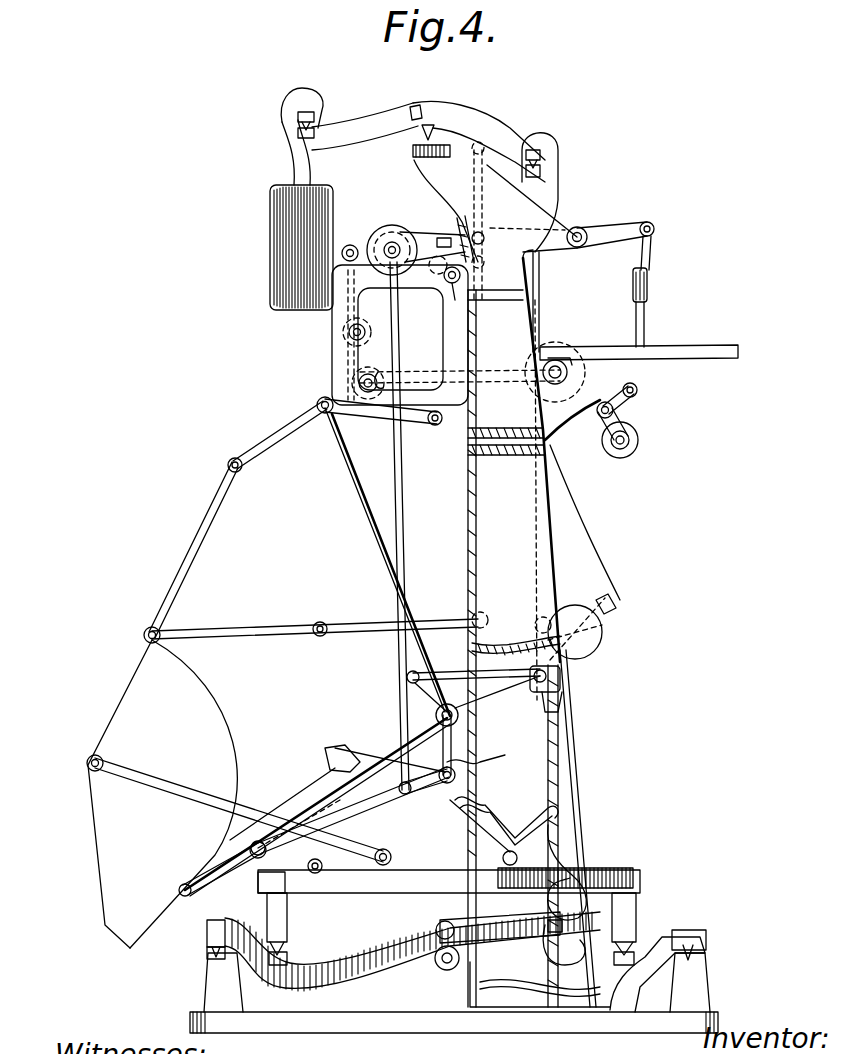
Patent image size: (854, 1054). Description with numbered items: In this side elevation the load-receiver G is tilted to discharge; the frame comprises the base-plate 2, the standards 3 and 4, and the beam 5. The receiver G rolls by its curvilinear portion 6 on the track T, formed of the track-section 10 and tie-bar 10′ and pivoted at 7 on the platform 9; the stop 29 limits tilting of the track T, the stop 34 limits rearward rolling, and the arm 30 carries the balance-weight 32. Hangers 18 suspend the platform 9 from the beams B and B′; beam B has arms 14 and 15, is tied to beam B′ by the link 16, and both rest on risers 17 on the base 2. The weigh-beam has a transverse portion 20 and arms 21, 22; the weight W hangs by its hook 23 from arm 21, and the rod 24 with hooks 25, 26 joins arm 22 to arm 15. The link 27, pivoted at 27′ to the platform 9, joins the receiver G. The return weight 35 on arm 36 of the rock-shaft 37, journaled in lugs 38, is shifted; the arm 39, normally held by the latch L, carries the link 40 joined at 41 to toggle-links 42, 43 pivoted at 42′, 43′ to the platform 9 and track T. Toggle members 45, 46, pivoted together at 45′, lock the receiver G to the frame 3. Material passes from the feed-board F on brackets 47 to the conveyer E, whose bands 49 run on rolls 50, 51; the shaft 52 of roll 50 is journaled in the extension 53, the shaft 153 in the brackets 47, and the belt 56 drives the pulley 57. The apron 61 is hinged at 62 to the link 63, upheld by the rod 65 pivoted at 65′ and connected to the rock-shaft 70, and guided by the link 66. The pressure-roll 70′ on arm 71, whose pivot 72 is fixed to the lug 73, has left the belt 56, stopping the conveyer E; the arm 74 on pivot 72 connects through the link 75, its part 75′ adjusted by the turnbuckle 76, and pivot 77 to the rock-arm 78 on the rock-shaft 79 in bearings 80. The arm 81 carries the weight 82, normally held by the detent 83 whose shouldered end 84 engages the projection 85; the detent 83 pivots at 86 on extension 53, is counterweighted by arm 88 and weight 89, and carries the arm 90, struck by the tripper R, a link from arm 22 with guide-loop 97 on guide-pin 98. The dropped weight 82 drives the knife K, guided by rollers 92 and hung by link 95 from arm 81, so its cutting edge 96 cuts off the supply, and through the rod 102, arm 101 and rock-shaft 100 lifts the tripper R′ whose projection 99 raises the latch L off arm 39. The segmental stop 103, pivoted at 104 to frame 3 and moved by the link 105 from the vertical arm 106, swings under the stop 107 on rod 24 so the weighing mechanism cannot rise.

The base plate 2 is at (390, 1012).
The standard column 3 is at (472, 530).
The rack bar 4 is at (560, 752).
The upper column 5 is at (514, 286).
The segment edge 6 is at (234, 758).
The link 7 is at (440, 745).
The cross beam 9 is at (375, 880).
The lever bar 10 is at (353, 768).
The lever pivot 10′ is at (182, 890).
The curved bar 14 is at (358, 958).
The lower bar 15 is at (525, 935).
The roller 16 is at (435, 960).
The foot 17 is at (208, 972).
The standard post 18 is at (267, 905).
The arm joint 20 is at (422, 112).
The arm 21 is at (347, 125).
The arm 22 is at (470, 128).
The spout 23 is at (282, 112).
The slide bar 24 is at (541, 282).
The hook 25 is at (552, 132).
The hook 26 is at (568, 950).
The rod 27 is at (205, 793).
The rod pivot 27′ is at (388, 852).
The link 29 is at (250, 858).
The disc 30 is at (603, 612).
The pin 32 is at (585, 606).
The stop 34 is at (340, 745).
The hook 35 is at (550, 900).
The pivot 36 is at (548, 858).
The bracket 37 is at (515, 876).
The block 38 is at (548, 878).
The link 39 is at (480, 808).
The link 40 is at (352, 812).
The pivot 41 is at (258, 840).
The pivot 42 is at (262, 860).
The pivot 42′ is at (314, 874).
The link 43 is at (295, 808).
The link 43′ is at (312, 782).
The rod 45 is at (253, 631).
The pivot 45′ is at (158, 630).
The rod 46 is at (352, 627).
The arm 47 is at (572, 414).
The plate 49 is at (430, 372).
The pawl 50 is at (375, 372).
The bar 51 is at (563, 365).
The pivot 52 is at (358, 385).
The plate 53 is at (336, 338).
The cam 56 is at (608, 502).
The bar 57 is at (552, 360).
The link 61 is at (272, 432).
The pivot 62 is at (232, 461).
The link 63 is at (192, 538).
The rod 65 is at (345, 468).
The pivot 65′ is at (316, 403).
The bar 66 is at (378, 412).
The bar 70 is at (447, 680).
The pulley 70′ is at (638, 442).
The link 71 is at (620, 425).
The pivot 72 is at (613, 410).
The link 73 is at (625, 392).
The pivot 74 is at (637, 391).
The rod 75 is at (646, 277).
The rod 75′ is at (652, 250).
The turnbuckle 76 is at (633, 283).
The pivot 77 is at (650, 223).
The link 78 is at (615, 226).
The pivot 79 is at (579, 227).
The arm 80 is at (558, 222).
The arm 81 is at (412, 245).
The pulley 82 is at (376, 240).
The pivot 83 is at (462, 272).
The bar 84 is at (463, 220).
The stud 85 is at (440, 238).
The pin 86 is at (456, 285).
The pin 88 is at (445, 280).
The pivot 89 is at (432, 272).
The pin 90 is at (465, 282).
The pivot 92 is at (362, 328).
The pivot 95 is at (344, 258).
The pin 96 is at (345, 378).
The pin 97 is at (482, 234).
The pin 98 is at (484, 258).
The pivot 99 is at (457, 775).
The rod 100 is at (385, 758).
The pivot 101 is at (404, 790).
The rod 102 is at (400, 495).
The bracket 103 is at (562, 677).
The pin 104 is at (538, 618).
The cable 105 is at (500, 655).
The pivot 106 is at (435, 712).
The piece 107 is at (560, 700).
The pivot 153 is at (544, 368).
The weight W is at (270, 214).
The plate K is at (340, 324).
The plate E is at (459, 339).
The bar F is at (700, 350).
The segment G is at (162, 794).
The bar B is at (412, 951).
The bracket B′ is at (657, 974).
The rod R is at (484, 191).
The pivot R′ is at (466, 780).
The link T is at (289, 787).
The lever L is at (475, 760).